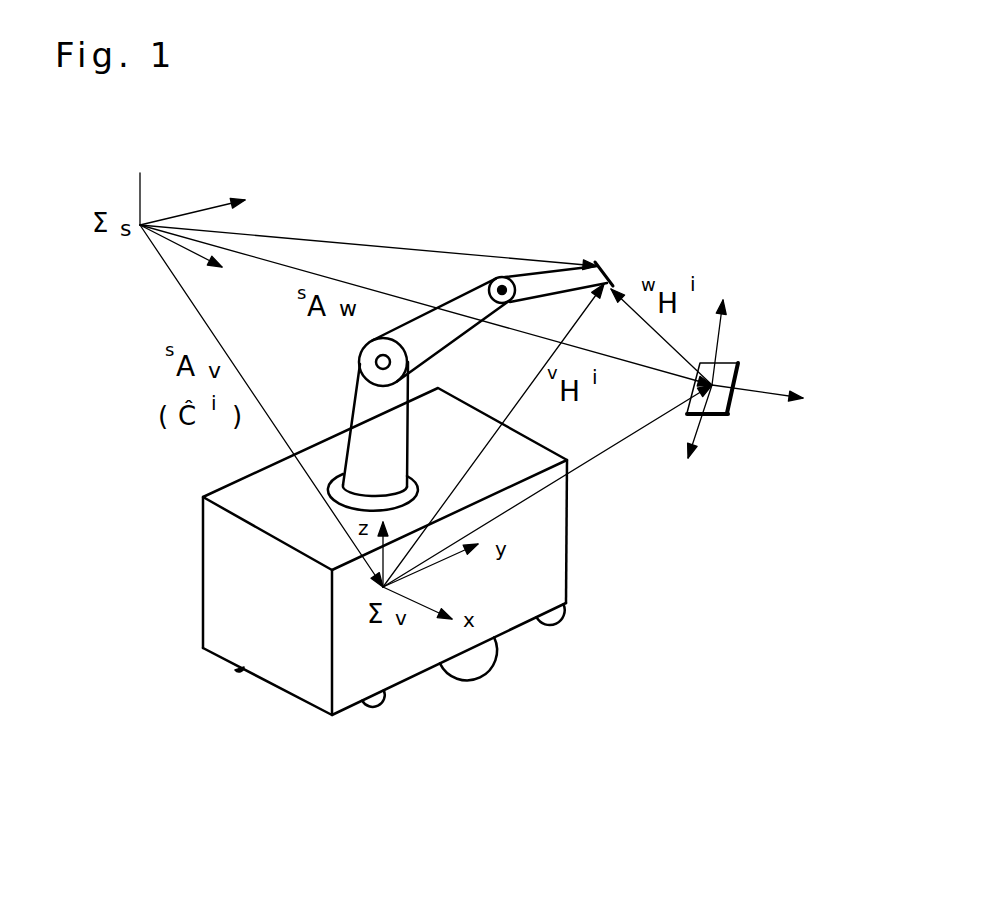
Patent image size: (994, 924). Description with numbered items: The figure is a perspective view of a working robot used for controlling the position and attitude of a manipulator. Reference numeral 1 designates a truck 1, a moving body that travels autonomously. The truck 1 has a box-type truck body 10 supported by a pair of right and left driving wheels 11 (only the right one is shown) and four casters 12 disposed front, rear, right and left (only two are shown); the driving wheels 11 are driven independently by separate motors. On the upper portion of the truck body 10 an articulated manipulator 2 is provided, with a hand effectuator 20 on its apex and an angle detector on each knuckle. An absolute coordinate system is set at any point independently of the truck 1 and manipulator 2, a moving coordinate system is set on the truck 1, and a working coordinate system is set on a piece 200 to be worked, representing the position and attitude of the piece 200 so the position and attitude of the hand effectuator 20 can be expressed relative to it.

The truck 1 is at (190, 574).
The articulated manipulator 2 is at (459, 282).
The truck body 10 is at (558, 548).
The driving wheel 11 is at (470, 668).
The caster 12 is at (378, 715).
The hand effectuator 20 is at (613, 270).
The piece to be worked 200 is at (743, 365).